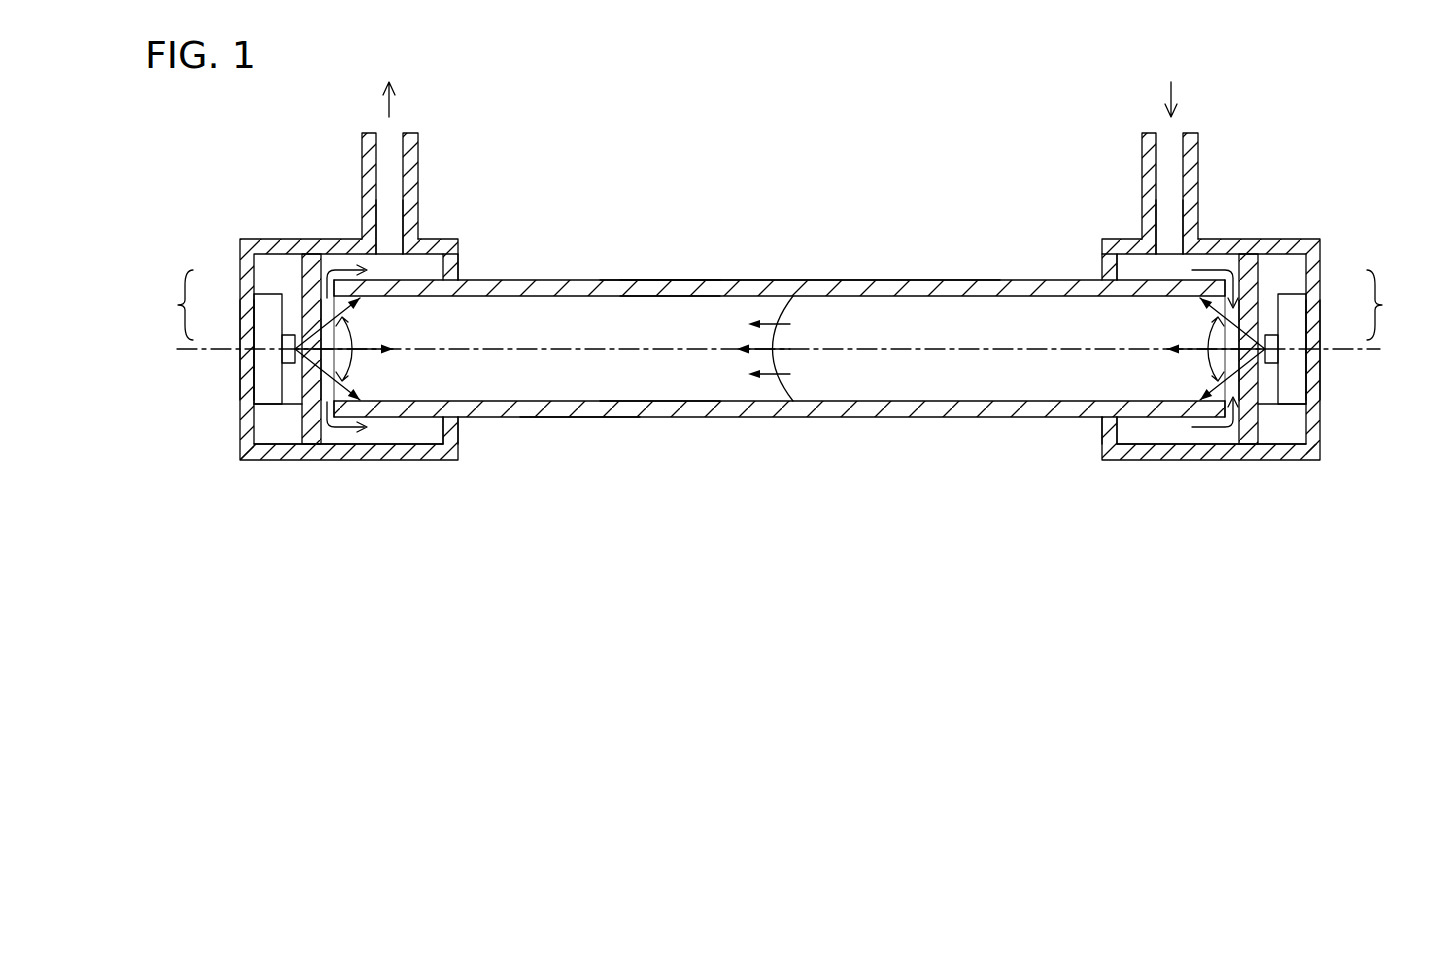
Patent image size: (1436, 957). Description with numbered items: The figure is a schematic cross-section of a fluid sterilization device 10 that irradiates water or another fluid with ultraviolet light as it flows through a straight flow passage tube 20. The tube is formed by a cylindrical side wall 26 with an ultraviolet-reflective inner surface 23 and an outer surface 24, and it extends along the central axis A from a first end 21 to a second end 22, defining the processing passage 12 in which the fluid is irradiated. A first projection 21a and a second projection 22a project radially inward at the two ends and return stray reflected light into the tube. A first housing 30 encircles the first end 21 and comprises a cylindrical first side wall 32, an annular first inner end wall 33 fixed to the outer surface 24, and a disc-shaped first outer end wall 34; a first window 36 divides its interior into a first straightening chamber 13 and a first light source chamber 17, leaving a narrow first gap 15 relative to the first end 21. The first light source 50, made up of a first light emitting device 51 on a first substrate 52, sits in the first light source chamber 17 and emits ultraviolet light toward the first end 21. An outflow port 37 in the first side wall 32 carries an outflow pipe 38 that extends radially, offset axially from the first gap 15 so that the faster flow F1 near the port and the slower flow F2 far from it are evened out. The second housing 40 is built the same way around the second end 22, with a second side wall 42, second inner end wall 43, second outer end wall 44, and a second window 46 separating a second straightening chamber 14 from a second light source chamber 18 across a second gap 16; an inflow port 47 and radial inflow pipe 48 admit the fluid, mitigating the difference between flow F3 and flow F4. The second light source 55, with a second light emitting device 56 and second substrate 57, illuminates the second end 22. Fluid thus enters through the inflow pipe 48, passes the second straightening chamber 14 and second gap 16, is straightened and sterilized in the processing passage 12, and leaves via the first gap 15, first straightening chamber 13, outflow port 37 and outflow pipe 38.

The fluid sterilization device 10 is at (789, 590).
The processing passage 12 is at (922, 396).
The first straightening chamber 13 is at (451, 266).
The second straightening chamber 14 is at (1135, 270).
The first gap 15 is at (333, 260).
The second gap 16 is at (1237, 275).
The first light source chamber 17 is at (267, 430).
The second light source chamber 18 is at (1293, 430).
The flow passage tube 20 is at (852, 277).
The first end 21 is at (345, 408).
The first projection 21a is at (347, 402).
The second end 22 is at (1215, 408).
The second projection 22a is at (1215, 402).
The inner surface 23 is at (640, 404).
The outer surface 24 is at (585, 420).
The side wall 26 is at (672, 286).
The first housing 30 is at (272, 238).
The first side wall 32 is at (303, 247).
The first inner end wall 33 is at (453, 434).
The first outer end wall 34 is at (244, 381).
The first window 36 is at (308, 446).
The outflow port 37 is at (384, 232).
The outflow pipe 38 is at (410, 148).
The second housing 40 is at (1292, 238).
The second side wall 42 is at (1263, 247).
The second inner end wall 43 is at (1112, 430).
The second outer end wall 44 is at (1316, 381).
The second window 46 is at (1251, 450).
The inflow port 47 is at (1162, 232).
The inflow pipe 48 is at (1148, 162).
The first light source 50 is at (170, 305).
The first light emitting device 51 is at (285, 342).
The first substrate 52 is at (267, 317).
The second light source 55 is at (1394, 305).
The second light emitting device 56 is at (1275, 342).
The second substrate 57 is at (1293, 317).
The central axis A is at (987, 337).
The flow F1 is at (350, 267).
The flow F2 is at (337, 430).
The flow F3 is at (1213, 268).
The flow F4 is at (1225, 430).